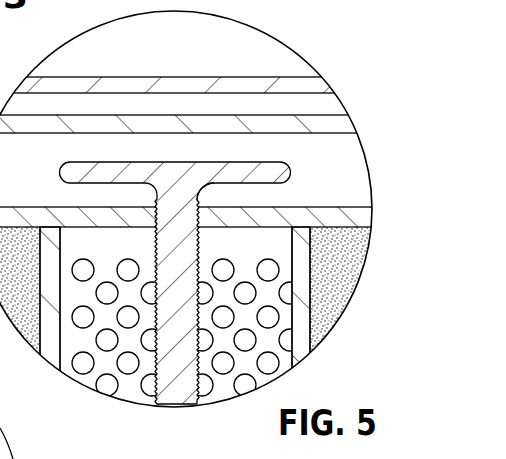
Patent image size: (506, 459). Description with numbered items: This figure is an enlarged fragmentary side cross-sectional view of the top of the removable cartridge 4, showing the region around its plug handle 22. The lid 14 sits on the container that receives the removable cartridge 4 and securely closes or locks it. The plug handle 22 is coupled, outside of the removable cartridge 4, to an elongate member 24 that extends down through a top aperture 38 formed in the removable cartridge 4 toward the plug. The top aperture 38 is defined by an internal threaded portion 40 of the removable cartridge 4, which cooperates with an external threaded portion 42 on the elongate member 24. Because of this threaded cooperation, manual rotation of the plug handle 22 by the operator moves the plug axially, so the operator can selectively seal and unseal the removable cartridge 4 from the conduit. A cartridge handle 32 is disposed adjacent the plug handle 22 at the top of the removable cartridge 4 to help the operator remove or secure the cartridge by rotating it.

The removable cartridge 4 is at (339, 207).
The lid 14 is at (179, 77).
The plug handle 22 is at (117, 162).
The elongate member 24 is at (195, 318).
The cartridge handle 32 is at (243, 115).
The top aperture 38 is at (197, 213).
The internal threaded portion 40 is at (183, 215).
The external threaded portion 42 is at (153, 217).